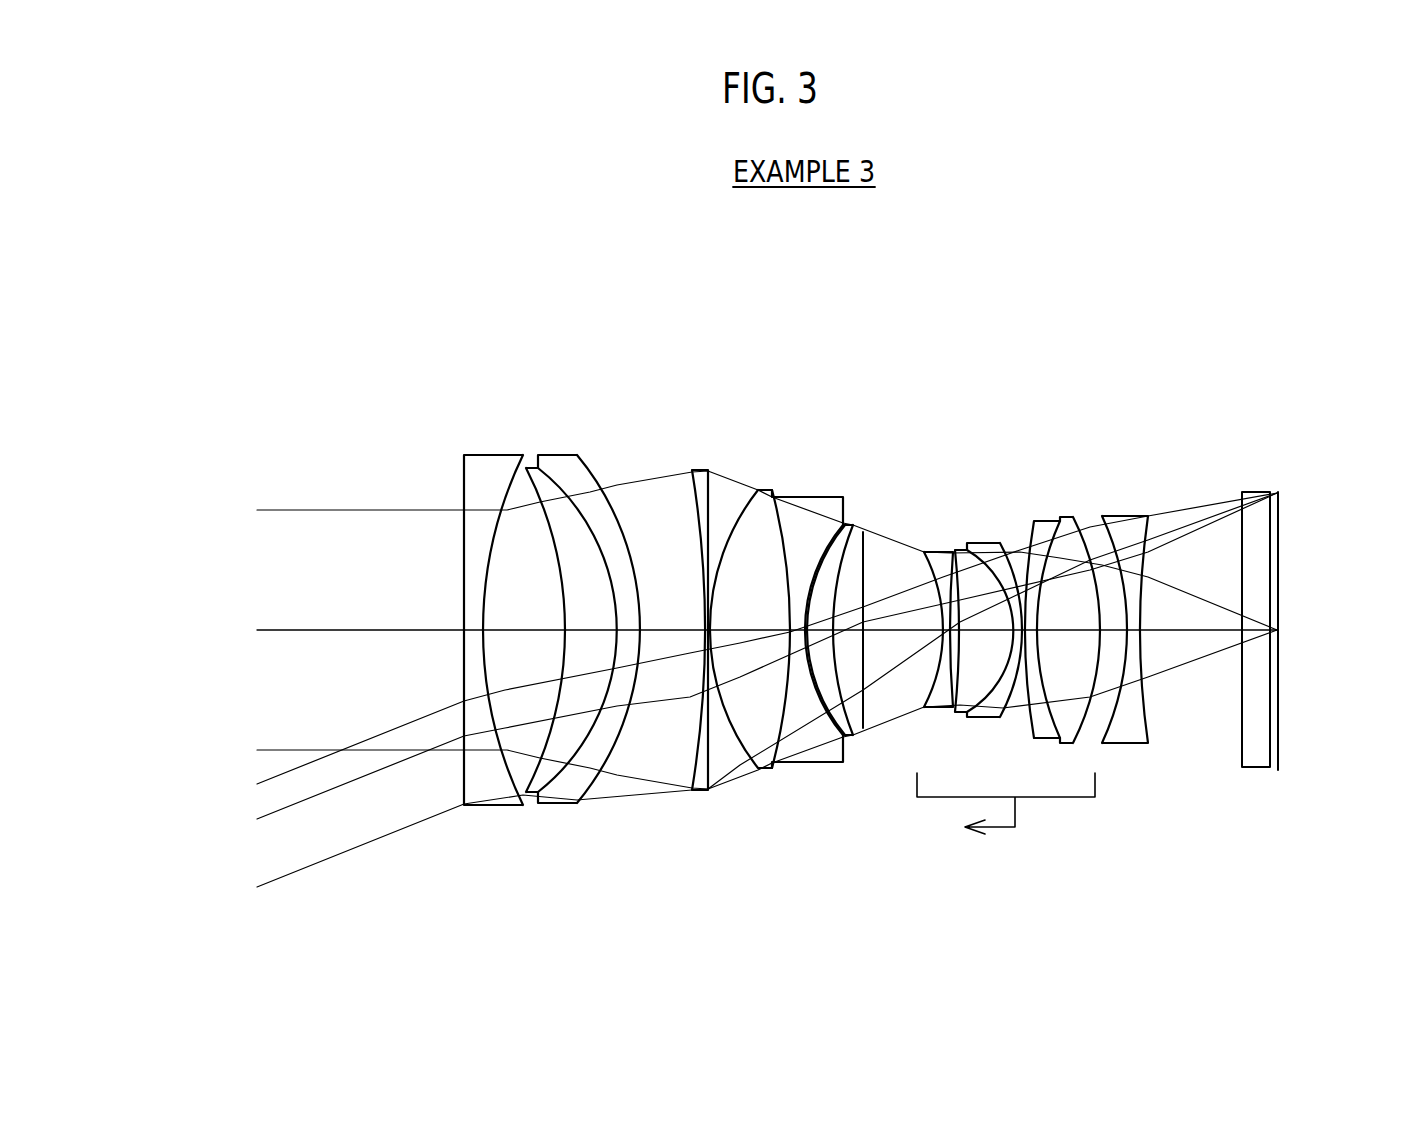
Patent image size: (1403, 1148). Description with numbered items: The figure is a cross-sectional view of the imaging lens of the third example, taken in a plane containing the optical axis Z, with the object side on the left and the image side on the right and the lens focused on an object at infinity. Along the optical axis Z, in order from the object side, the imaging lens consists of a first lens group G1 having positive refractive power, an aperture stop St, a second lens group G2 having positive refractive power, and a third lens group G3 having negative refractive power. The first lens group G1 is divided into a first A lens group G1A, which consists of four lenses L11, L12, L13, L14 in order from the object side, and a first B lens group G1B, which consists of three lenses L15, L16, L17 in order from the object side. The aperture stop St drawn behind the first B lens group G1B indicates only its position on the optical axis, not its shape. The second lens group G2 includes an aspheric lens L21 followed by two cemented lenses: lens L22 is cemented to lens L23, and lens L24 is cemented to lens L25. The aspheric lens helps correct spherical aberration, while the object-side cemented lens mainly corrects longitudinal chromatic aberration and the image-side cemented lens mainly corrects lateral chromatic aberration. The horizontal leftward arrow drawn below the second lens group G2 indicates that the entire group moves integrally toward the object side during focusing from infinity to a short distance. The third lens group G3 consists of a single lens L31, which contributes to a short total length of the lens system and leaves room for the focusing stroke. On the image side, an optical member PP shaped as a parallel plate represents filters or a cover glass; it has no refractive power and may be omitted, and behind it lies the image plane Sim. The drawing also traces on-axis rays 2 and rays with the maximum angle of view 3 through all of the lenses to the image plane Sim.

The first lens group G1 is at (820, 292).
The first A lens group G1A is at (465, 342).
The first B lens group G1B is at (705, 369).
The second lens group G2 is at (1080, 362).
The third lens group G3 is at (1147, 384).
The lens L11 is at (500, 453).
The lens L12 is at (532, 470).
The lens L13 is at (560, 457).
The lens L14 is at (698, 468).
The lens L15 is at (760, 490).
The lens L16 is at (803, 497).
The lens L17 is at (850, 523).
The lens L21 is at (938, 553).
The lens L22 is at (958, 550).
The lens L23 is at (977, 543).
The lens L24 is at (1043, 520).
The lens L25 is at (1063, 517).
The lens L31 is at (1125, 515).
The aperture stop St is at (868, 572).
The optical member PP is at (1252, 768).
The image plane Sim is at (1280, 772).
The optical axis Z is at (353, 628).
The on-axis rays 2 is at (243, 492).
The rays with the maximum angle of view 3 is at (243, 786).